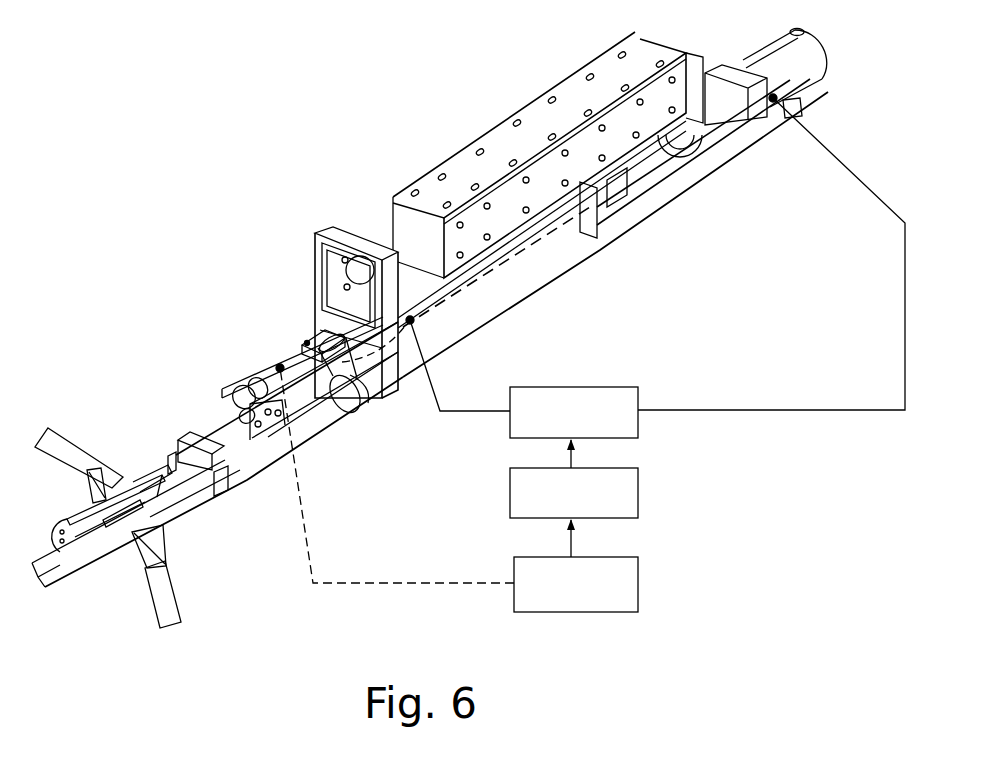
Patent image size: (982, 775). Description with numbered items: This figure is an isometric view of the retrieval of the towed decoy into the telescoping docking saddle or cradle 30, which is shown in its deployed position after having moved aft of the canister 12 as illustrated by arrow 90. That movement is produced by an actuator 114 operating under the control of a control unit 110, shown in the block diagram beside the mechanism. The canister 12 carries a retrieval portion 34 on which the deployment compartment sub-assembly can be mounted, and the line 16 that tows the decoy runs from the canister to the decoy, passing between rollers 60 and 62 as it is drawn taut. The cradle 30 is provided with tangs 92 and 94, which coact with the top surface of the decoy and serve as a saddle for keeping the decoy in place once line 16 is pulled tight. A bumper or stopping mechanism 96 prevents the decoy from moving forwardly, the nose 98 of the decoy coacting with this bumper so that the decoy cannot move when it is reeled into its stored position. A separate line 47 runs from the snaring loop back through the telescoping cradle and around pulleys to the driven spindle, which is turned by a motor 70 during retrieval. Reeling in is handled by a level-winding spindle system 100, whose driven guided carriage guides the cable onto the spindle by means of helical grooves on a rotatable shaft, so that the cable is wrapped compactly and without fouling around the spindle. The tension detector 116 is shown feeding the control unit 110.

The canister 12 is at (447, 160).
The cable 16 is at (457, 300).
The telescoping docking saddle or cradle 30 is at (336, 376).
The retrieval portion 34 is at (518, 275).
The line 47 is at (287, 362).
The roller 60 is at (240, 455).
The roller 62 is at (240, 388).
The motor 70 is at (817, 88).
The arrow 90 is at (307, 342).
The tang 92 is at (168, 460).
The tang 94 is at (220, 485).
The bumper or stopping mechanism 96 is at (368, 403).
The nose of the decoy 98 is at (343, 408).
The level-winding spindle system 100 is at (650, 170).
The control unit 110 is at (638, 476).
The actuator 114 is at (632, 387).
The tension detector 116 is at (638, 571).